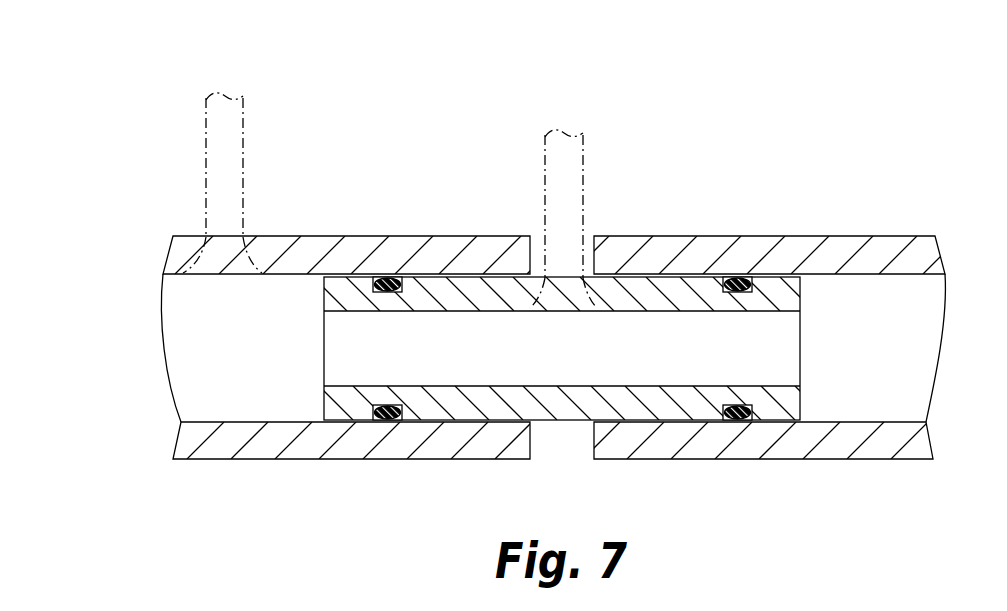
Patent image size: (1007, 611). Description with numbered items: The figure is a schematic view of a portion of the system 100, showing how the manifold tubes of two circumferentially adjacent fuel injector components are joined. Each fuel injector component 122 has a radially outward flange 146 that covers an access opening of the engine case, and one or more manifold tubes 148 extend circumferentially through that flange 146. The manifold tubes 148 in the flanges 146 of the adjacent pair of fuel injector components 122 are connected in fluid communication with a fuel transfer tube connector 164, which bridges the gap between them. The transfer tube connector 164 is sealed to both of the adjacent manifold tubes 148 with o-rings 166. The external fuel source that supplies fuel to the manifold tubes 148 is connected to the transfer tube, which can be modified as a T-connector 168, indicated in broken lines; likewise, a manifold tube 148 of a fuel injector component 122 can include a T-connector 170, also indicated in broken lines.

The system 100 is at (97, 127).
The fuel injector component 122 is at (332, 211).
The radially outward flange 146 is at (190, 461).
The manifold tube 148 is at (233, 365).
The fuel transfer tube connector 164 is at (806, 303).
The o-ring 166 is at (389, 276).
The T-connector 168 is at (530, 141).
The T-connector 170 is at (198, 136).